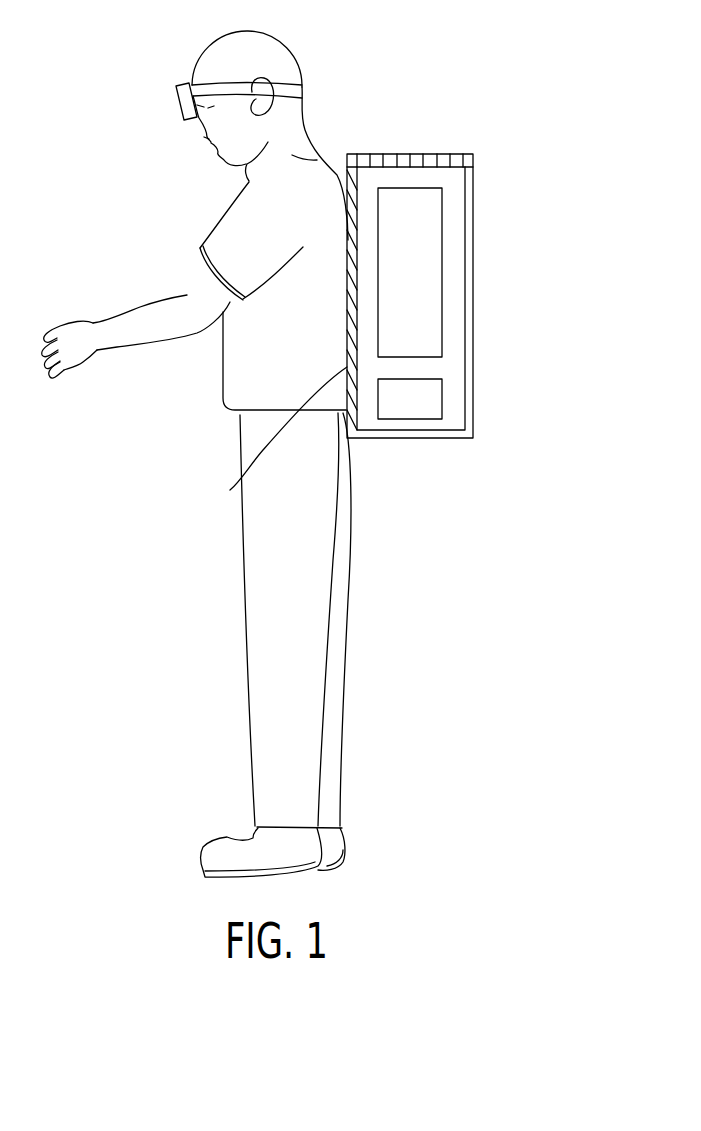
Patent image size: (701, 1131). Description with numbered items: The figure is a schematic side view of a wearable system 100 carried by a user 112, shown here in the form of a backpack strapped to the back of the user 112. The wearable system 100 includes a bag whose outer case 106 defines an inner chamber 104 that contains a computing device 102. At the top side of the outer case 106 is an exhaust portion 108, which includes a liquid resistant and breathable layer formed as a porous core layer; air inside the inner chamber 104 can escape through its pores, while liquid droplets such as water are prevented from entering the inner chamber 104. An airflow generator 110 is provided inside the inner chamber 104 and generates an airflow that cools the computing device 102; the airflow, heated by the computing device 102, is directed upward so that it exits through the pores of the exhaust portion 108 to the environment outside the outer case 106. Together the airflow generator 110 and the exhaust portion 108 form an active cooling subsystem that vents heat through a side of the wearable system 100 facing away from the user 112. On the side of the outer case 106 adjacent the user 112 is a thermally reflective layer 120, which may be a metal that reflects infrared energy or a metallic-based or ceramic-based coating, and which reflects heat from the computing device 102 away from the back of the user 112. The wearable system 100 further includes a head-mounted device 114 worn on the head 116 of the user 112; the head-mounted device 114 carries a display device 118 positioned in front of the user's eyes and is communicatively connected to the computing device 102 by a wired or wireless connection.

The wearable system 100 is at (373, 303).
The computing device 102 is at (420, 310).
The inner chamber 104 is at (453, 280).
The outer case 106 is at (473, 200).
The exhaust portion 108 is at (415, 153).
The airflow generator 110 is at (442, 400).
The user 112 is at (196, 438).
The head-mounted device 114 is at (233, 81).
The head 116 is at (213, 55).
The display device 118 is at (183, 105).
The thermally reflective layer 120 is at (473, 243).